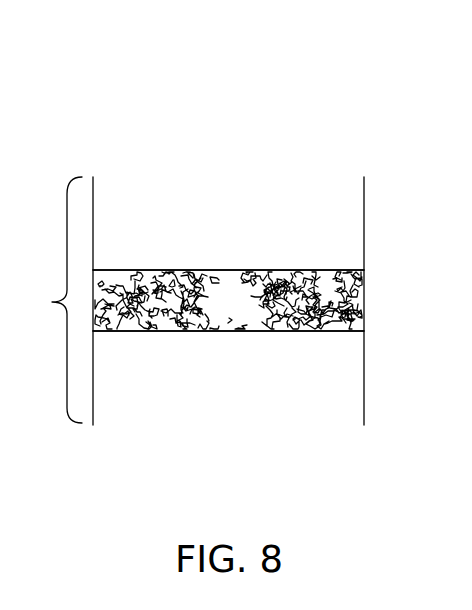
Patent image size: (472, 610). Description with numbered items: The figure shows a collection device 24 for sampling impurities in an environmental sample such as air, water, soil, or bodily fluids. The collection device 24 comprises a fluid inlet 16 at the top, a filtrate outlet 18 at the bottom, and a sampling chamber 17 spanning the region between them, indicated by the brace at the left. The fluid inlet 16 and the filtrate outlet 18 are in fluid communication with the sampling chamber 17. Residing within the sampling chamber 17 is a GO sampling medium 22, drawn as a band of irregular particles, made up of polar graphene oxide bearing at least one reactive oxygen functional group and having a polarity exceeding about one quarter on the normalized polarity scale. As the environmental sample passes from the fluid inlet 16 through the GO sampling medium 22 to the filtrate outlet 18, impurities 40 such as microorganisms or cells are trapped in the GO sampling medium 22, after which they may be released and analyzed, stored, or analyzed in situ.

The fluid inlet 16 is at (243, 234).
The sampling chamber 17 is at (54, 300).
The filtrate outlet 18 is at (243, 391).
The GO sampling medium 22 is at (243, 312).
The collection device 24 is at (345, 121).
The impurities 40 is at (147, 330).